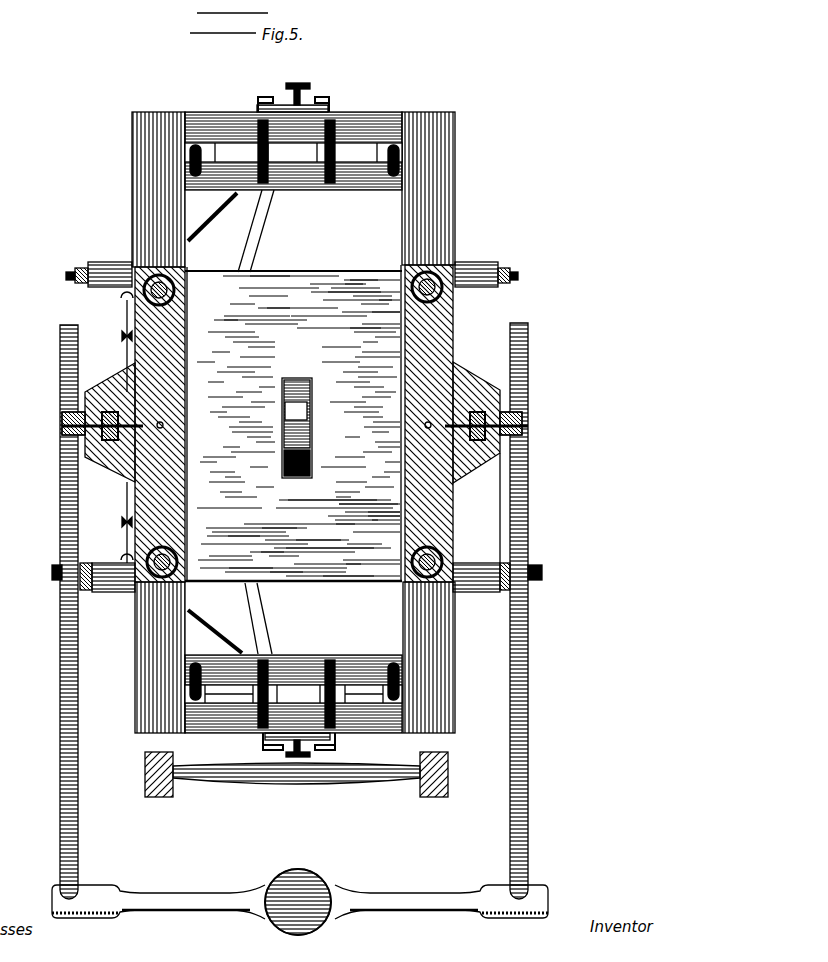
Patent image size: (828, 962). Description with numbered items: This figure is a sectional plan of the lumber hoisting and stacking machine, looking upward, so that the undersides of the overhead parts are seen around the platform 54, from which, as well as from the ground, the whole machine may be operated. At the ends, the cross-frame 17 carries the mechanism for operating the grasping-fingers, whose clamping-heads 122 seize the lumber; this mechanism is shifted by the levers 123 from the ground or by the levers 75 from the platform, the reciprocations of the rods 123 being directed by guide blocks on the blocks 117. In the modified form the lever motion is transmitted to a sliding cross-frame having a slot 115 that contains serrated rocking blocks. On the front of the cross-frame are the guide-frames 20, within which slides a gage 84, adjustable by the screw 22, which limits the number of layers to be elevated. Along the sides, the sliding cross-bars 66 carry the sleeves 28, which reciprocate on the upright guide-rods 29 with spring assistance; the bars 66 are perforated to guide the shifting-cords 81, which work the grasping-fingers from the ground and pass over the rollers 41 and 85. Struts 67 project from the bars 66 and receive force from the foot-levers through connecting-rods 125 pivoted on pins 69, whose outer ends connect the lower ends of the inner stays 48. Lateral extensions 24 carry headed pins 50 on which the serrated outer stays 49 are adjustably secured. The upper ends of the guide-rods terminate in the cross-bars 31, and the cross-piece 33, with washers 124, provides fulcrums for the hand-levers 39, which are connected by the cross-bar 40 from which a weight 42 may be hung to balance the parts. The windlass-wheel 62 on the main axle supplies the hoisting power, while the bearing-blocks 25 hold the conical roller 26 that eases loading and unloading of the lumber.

The platform 54 is at (293, 422).
The blocks 117 is at (386, 118).
The cross-frame 17 is at (357, 182).
The clamping-heads 122 is at (194, 145).
The guide-frames 20 is at (262, 100).
The gage 84 is at (300, 100).
The screw 22 is at (313, 758).
The levers 123 is at (205, 210).
The levers 75 is at (260, 236).
The sliding cross-bars 66 is at (294, 423).
The struts 67 is at (290, 432).
The reciprocatory sleeves 28 is at (190, 296).
The guide-rods 29 is at (190, 306).
The lateral extensions 24 is at (503, 246).
The serrated outer stays 49 is at (80, 268).
The headed pins 50 is at (66, 277).
The windlass-wheel 62 is at (297, 428).
The hand-levers 39 is at (78, 750).
The inner stays 48 is at (78, 410).
The connecting-rods 125 is at (112, 440).
The pins 69 is at (64, 426).
The shifting-cords 81 is at (125, 358).
The roller 41 is at (122, 336).
The roller 85 is at (122, 522).
The cross-bars 31 is at (296, 577).
The washers 124 is at (88, 591).
The cross-piece 33 is at (52, 572).
The bearing-blocks 25 is at (173, 790).
The conical roller 26 is at (296, 773).
The cross-bar 40 is at (300, 902).
The weight 42 is at (298, 902).
The slot 115 is at (294, 694).